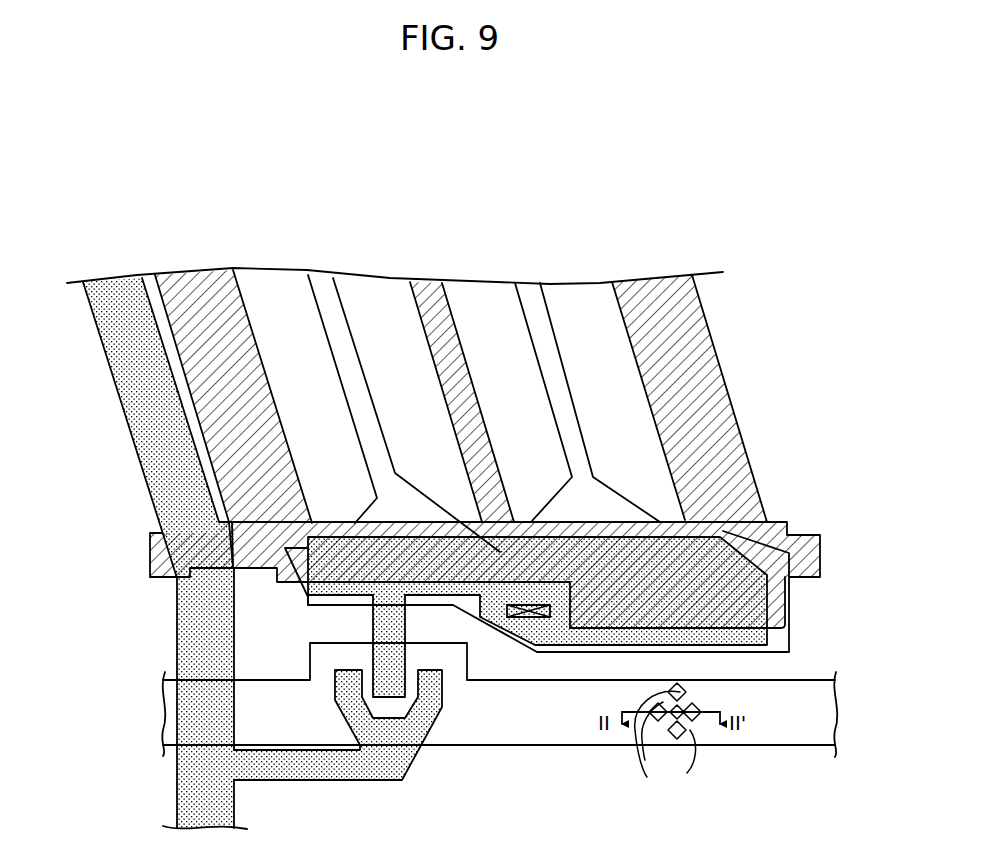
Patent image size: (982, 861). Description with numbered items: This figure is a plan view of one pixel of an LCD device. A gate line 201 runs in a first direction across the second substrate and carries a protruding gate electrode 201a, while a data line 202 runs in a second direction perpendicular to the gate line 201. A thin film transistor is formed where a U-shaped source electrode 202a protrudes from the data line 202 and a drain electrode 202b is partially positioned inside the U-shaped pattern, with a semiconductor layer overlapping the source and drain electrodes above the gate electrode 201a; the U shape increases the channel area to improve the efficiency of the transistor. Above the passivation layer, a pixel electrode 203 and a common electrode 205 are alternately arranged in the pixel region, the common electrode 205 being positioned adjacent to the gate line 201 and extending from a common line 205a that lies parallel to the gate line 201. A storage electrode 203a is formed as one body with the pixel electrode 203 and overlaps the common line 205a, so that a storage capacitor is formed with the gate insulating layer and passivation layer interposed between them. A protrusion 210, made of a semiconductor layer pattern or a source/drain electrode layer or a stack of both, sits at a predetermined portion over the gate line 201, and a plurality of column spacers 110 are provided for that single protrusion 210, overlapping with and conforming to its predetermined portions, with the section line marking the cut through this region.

The column spacers 110 is at (665, 741).
The gate line 201 is at (530, 748).
The gate electrode 201a is at (468, 662).
The data line 202 is at (185, 624).
The source electrode 202a is at (432, 722).
The drain electrode 202b is at (383, 675).
The pixel electrode 203 is at (530, 293).
The storage electrode 203a is at (790, 603).
The common electrode 205 is at (230, 338).
The common line 205a is at (804, 537).
The protrusion 210 is at (680, 702).